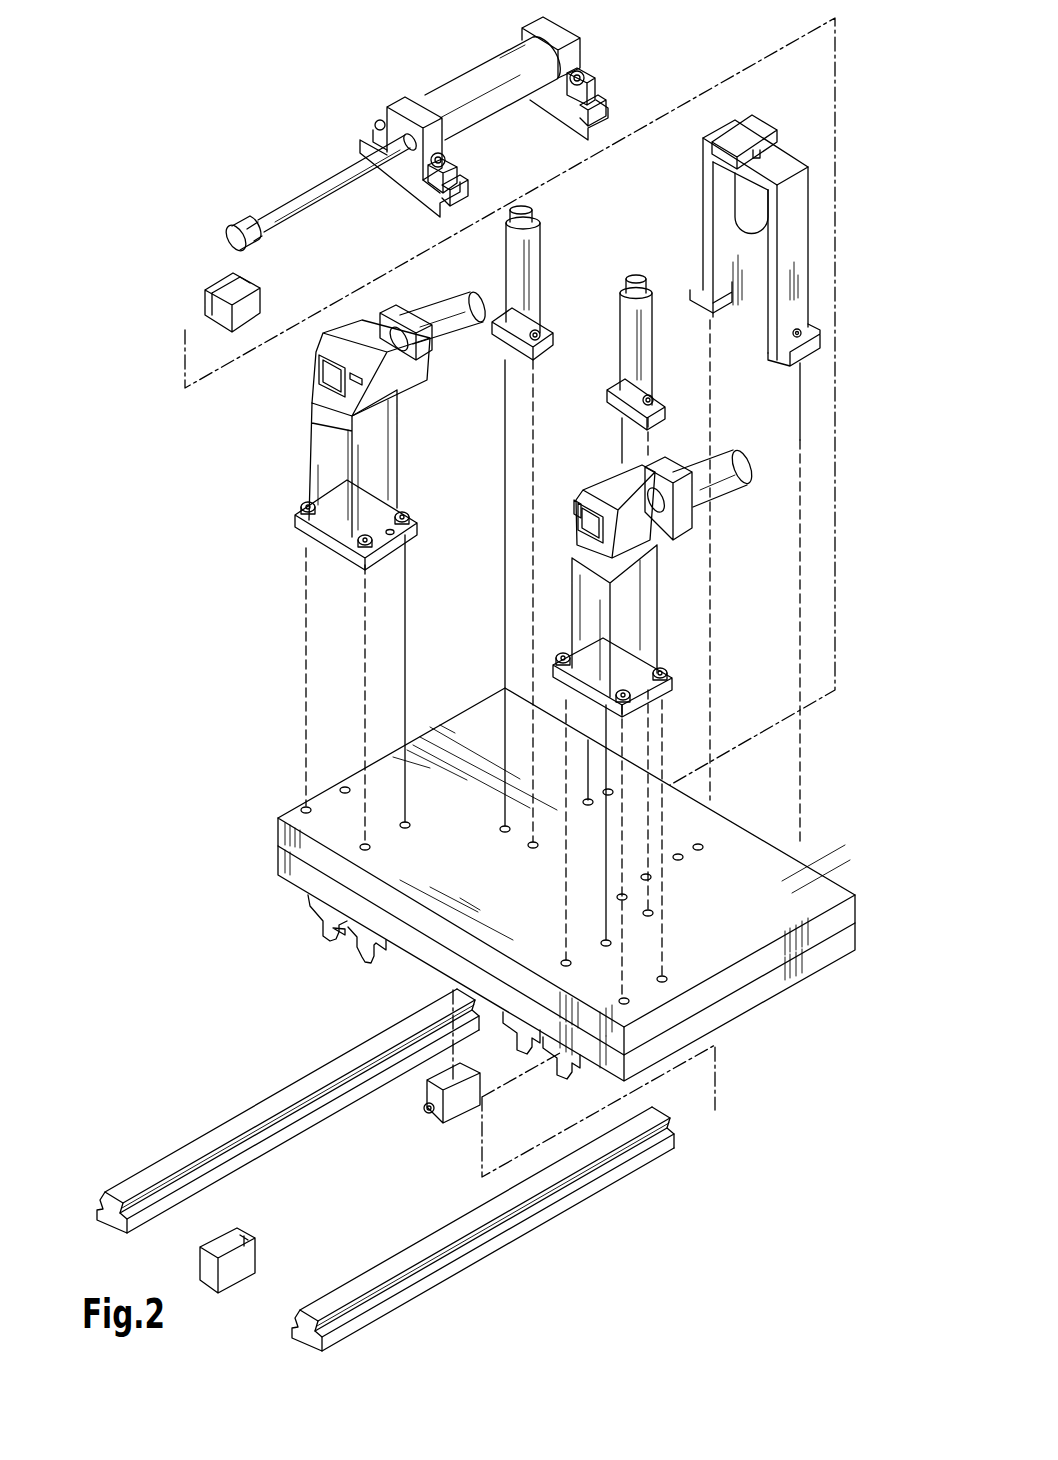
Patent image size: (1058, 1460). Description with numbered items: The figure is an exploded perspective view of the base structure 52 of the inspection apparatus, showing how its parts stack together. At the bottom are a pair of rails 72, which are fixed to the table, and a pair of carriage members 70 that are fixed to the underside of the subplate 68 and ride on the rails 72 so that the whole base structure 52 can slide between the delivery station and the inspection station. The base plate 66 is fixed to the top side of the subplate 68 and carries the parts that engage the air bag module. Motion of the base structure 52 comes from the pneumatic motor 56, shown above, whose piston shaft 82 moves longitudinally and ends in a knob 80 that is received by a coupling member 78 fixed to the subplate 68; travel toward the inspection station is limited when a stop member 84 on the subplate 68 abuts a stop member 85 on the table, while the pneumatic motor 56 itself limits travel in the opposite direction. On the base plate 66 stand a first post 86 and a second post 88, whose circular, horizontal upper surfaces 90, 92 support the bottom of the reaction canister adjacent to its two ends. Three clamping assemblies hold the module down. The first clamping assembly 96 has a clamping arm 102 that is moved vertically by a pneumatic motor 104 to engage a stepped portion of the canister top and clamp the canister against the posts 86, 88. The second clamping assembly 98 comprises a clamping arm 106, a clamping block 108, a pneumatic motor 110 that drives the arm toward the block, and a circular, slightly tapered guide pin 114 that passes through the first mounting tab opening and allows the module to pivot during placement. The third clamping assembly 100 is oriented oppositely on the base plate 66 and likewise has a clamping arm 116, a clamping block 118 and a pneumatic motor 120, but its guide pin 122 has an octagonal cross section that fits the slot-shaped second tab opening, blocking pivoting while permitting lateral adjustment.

The base structure 52 is at (166, 428).
The pneumatic motor 56 is at (455, 78).
The base plate 66 is at (276, 838).
The subplate 68 is at (274, 860).
The carriage members 70 is at (300, 928).
The rails 72 is at (200, 1146).
The coupling member 78 is at (210, 288).
The knob 80 is at (237, 224).
The piston shaft 82 is at (330, 178).
The stop member 84 is at (428, 1112).
The stop member 85 is at (252, 1233).
The first post 86 is at (624, 327).
The second post 88 is at (544, 272).
The upper surface 90 is at (633, 282).
The upper surface 92 is at (527, 216).
The first clamping assembly 96 is at (763, 217).
The second clamping assembly 98 is at (602, 557).
The third clamping assembly 100 is at (345, 411).
The clamping arm 102 is at (757, 128).
The pneumatic motor 104 is at (745, 205).
The clamping arm 106 is at (590, 540).
The clamping block 108 is at (603, 490).
The pneumatic motor 110 is at (720, 468).
The guide pin 114 is at (578, 512).
The clamping arm 116 is at (333, 372).
The clamping block 118 is at (352, 333).
The pneumatic motor 120 is at (440, 312).
The guide pin 122 is at (367, 373).